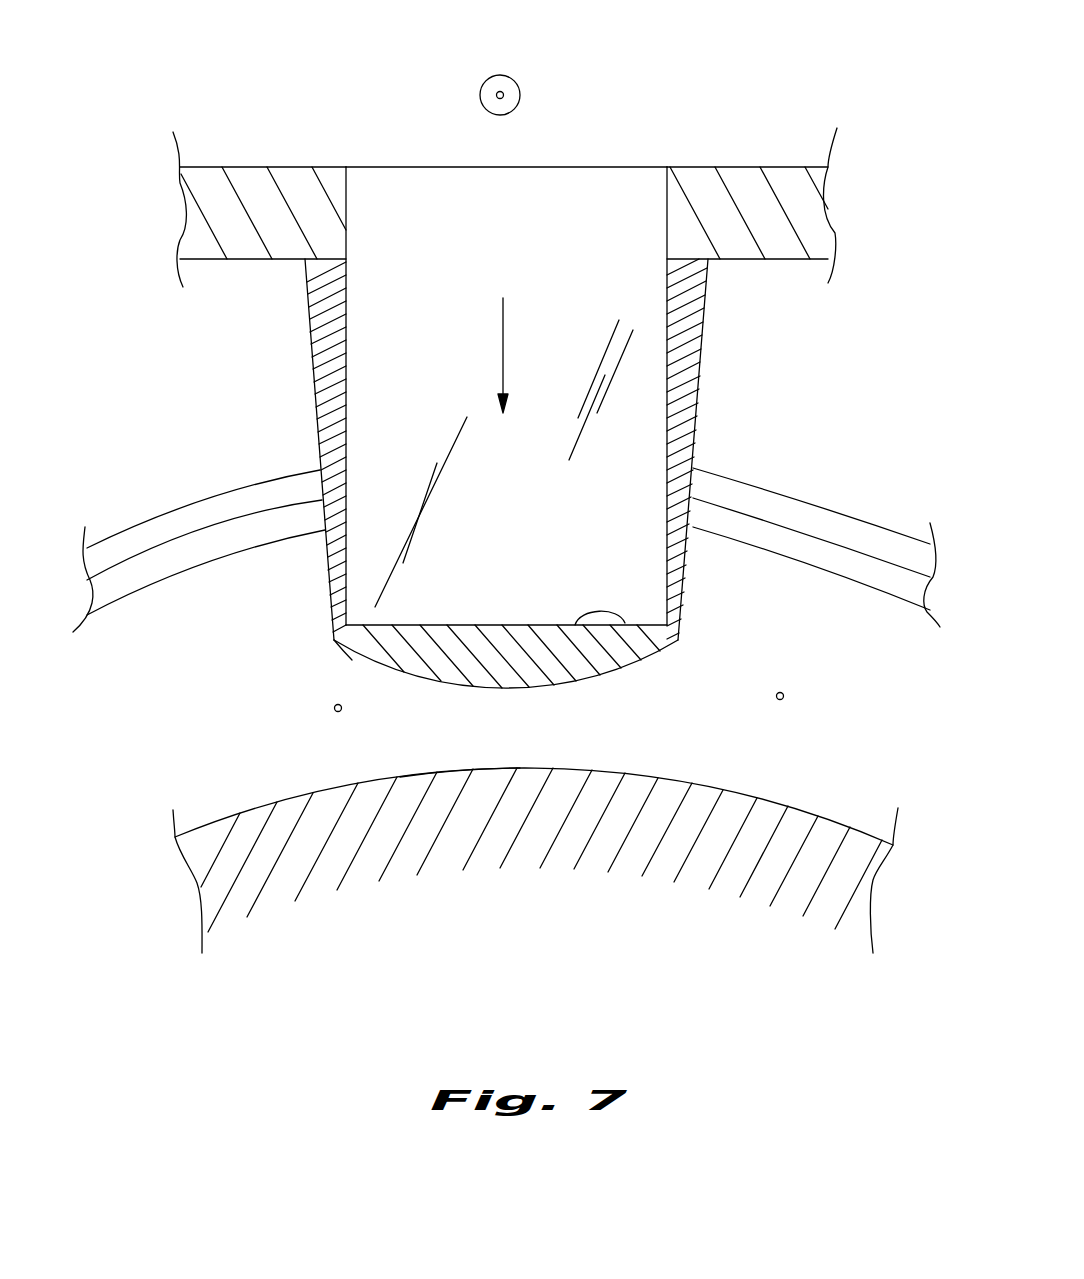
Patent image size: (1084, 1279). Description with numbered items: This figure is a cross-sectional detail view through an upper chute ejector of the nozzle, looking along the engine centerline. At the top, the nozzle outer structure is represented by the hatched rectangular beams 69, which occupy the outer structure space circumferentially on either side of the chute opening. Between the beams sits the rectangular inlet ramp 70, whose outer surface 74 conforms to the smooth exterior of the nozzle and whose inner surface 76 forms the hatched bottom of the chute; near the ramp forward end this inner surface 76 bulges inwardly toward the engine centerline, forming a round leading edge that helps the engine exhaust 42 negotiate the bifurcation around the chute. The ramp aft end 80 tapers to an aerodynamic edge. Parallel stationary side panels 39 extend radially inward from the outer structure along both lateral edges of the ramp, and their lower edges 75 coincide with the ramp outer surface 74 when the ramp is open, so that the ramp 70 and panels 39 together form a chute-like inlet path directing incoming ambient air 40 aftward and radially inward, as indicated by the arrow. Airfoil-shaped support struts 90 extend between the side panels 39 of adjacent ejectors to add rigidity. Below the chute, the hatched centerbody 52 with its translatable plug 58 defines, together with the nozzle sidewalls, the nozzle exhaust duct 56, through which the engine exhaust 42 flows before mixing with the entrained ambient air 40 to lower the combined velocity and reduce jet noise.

The side panels 39 is at (320, 378).
The ambient air 40 is at (503, 92).
The engine exhaust 42 is at (784, 699).
The centerbody 52 is at (675, 783).
The nozzle exhaust duct 56 is at (341, 711).
The translatable plug 58 is at (459, 785).
The rectangular beams 69 is at (242, 195).
The inlet ramp 70 is at (590, 253).
The outer surface 74 is at (558, 495).
The panel lower edge 75 is at (334, 642).
The inner surface 76 is at (560, 677).
The aft end 80 is at (625, 623).
The support struts 90 is at (180, 562).